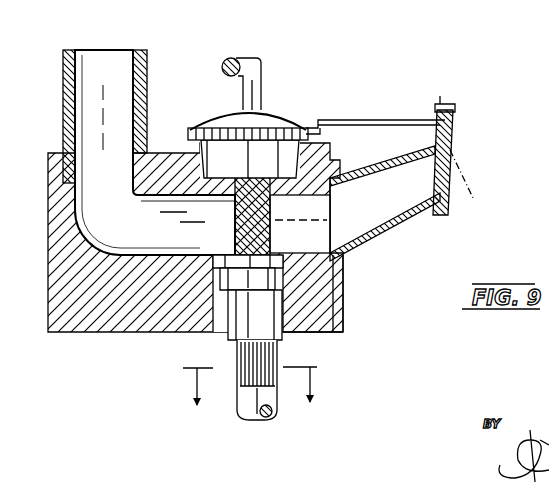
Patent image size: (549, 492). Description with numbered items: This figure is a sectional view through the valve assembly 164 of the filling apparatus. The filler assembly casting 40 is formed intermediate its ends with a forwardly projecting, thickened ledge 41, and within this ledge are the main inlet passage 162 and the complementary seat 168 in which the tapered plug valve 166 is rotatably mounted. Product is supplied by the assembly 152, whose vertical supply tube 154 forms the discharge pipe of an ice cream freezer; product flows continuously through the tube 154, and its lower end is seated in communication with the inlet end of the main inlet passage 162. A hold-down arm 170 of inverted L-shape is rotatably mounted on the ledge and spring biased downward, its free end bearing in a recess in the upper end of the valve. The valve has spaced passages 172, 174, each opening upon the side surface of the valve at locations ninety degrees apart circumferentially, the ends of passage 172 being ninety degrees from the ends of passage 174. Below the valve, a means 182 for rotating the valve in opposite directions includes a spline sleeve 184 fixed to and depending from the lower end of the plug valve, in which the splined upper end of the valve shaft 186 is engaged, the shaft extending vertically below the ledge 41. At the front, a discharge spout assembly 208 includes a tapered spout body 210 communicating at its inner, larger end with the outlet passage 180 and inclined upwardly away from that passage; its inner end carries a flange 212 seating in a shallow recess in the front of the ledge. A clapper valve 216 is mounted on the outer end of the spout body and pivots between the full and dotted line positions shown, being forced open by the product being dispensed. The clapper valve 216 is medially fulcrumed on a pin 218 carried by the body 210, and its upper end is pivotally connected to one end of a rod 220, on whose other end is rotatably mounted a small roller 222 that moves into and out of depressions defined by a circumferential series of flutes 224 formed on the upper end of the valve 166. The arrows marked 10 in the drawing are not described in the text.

The flow direction 10 is at (251, 386).
The filler assembly casting 40 is at (110, 330).
The ledge 41 is at (338, 334).
The assembly for supplying product 152 is at (117, 50).
The vertical supply tube 154 is at (140, 98).
The main inlet passage 162 is at (155, 152).
The valve assembly 164 is at (273, 108).
The tapered plug valve 166 is at (243, 187).
The seat 168 is at (215, 335).
The hold-down arm 170 is at (235, 58).
The passage 172 is at (228, 225).
The passage 174 is at (292, 212).
The outlet passage 180 is at (336, 198).
The means for rotating the valve 182 is at (235, 368).
The spline sleeve 184 is at (282, 336).
The valve shaft 186 is at (280, 406).
The discharge spout assembly 208 is at (406, 229).
The tapered spout body 210 is at (408, 166).
The flange 212 is at (346, 283).
The clapper valve 216 is at (468, 200).
The pin 218 is at (458, 130).
The rod 220 is at (410, 120).
The roller 222 is at (346, 121).
The flutes 224 is at (289, 132).